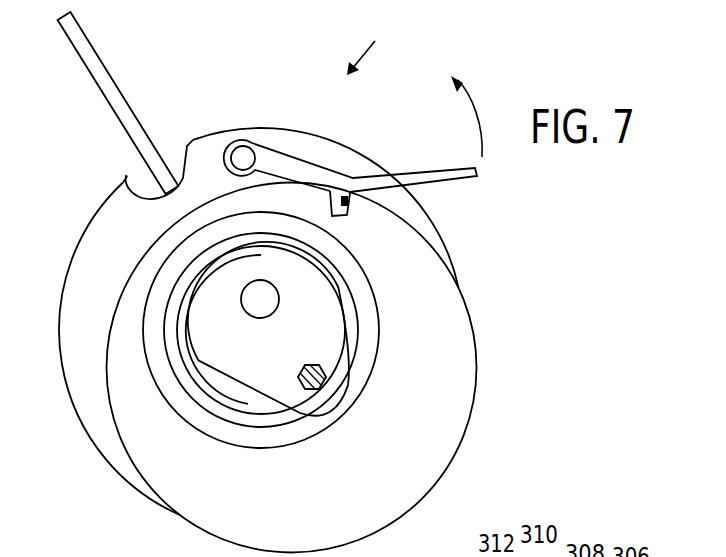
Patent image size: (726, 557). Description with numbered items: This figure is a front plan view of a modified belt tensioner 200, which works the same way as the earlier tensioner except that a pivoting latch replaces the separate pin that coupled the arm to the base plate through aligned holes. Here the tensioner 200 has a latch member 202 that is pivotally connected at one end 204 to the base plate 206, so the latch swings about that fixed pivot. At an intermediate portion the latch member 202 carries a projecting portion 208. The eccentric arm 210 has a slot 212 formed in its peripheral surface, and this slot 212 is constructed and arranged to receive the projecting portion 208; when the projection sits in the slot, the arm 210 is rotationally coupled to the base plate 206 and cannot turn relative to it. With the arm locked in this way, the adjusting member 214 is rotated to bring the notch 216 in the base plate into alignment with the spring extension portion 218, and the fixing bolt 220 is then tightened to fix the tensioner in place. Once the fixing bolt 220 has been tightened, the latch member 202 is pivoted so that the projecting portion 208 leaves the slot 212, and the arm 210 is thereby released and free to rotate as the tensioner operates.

The tensioner 200 is at (413, 85).
The latch member 202 is at (298, 158).
The end 204 is at (243, 150).
The base plate 206 is at (418, 217).
The projecting portion 208 is at (353, 200).
The eccentric arm 210 is at (443, 306).
The slot 212 is at (328, 218).
The adjusting member 214 is at (325, 330).
The notch 216 is at (136, 184).
The spring extension portion 218 is at (93, 62).
The fixing bolt 220 is at (252, 311).